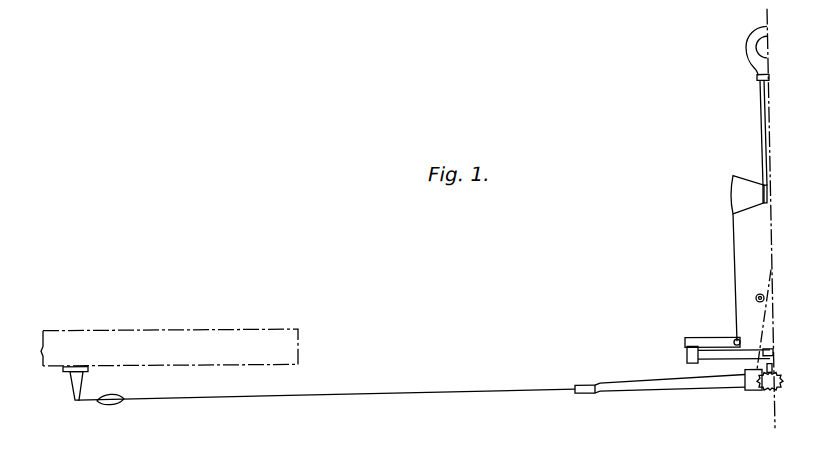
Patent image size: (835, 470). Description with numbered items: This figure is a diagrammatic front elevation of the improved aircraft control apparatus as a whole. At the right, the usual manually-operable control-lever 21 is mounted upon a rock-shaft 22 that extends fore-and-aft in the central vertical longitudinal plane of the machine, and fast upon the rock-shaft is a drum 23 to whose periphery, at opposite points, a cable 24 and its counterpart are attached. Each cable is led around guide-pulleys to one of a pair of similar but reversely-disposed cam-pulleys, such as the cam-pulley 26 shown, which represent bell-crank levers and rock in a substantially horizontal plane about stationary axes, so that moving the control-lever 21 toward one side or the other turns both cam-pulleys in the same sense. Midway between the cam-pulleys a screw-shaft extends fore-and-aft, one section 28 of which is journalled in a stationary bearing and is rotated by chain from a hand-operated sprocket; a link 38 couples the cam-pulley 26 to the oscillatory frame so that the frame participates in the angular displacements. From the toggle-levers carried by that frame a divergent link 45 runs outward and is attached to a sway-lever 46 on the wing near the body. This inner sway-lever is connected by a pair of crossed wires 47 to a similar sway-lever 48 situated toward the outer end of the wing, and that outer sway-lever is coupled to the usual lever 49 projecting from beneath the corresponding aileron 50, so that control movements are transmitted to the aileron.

The control-lever 21 is at (763, 118).
The rock-shaft 22 is at (766, 187).
The drum 23 is at (738, 188).
The cable 24 is at (732, 272).
The cam-pulley 26 is at (718, 344).
The screw-shaft section 28 is at (762, 391).
The link 38 is at (742, 358).
The divergent link 45 is at (668, 386).
The sway-lever 46 is at (578, 387).
The crossed wires 47 is at (410, 395).
The sway-lever 48 is at (108, 404).
The lever 49 is at (72, 389).
The aileron 50 is at (212, 328).